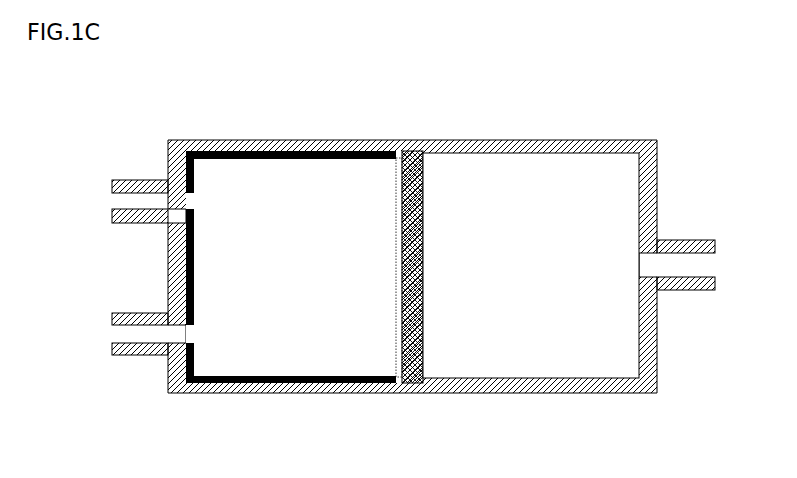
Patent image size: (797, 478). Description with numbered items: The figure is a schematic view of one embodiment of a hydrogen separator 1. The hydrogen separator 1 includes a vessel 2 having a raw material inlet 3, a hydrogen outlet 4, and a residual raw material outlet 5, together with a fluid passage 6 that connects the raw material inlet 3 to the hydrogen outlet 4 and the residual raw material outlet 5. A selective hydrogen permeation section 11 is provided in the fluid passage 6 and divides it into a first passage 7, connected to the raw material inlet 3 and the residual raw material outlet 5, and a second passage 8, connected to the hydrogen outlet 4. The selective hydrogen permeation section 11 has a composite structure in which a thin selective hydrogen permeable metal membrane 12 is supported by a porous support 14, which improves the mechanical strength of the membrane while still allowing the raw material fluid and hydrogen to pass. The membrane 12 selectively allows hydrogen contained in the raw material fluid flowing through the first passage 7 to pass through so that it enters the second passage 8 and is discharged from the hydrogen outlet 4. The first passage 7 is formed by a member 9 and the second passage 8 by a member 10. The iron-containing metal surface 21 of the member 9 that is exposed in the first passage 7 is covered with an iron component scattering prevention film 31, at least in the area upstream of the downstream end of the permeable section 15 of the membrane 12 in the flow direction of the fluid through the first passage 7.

The hydrogen separator 1 is at (405, 244).
The vessel 2 is at (405, 244).
The raw material inlet 3 is at (113, 204).
The hydrogen outlet 4 is at (717, 265).
The residual raw material outlet 5 is at (110, 337).
The fluid passage 6 is at (416, 307).
The first passage 7 is at (232, 352).
The second passage 8 is at (570, 340).
The member that forms the first passage 9 is at (203, 141).
The member that forms the second passage 10 is at (495, 140).
The selective hydrogen permeation section 11 is at (449, 305).
The selective hydrogen permeable metal membrane 12 is at (367, 309).
The porous support 14 is at (425, 347).
The permeable section 15 is at (390, 388).
The iron-containing metal surface 21 is at (291, 231).
The iron component scattering prevention film 31 is at (297, 155).